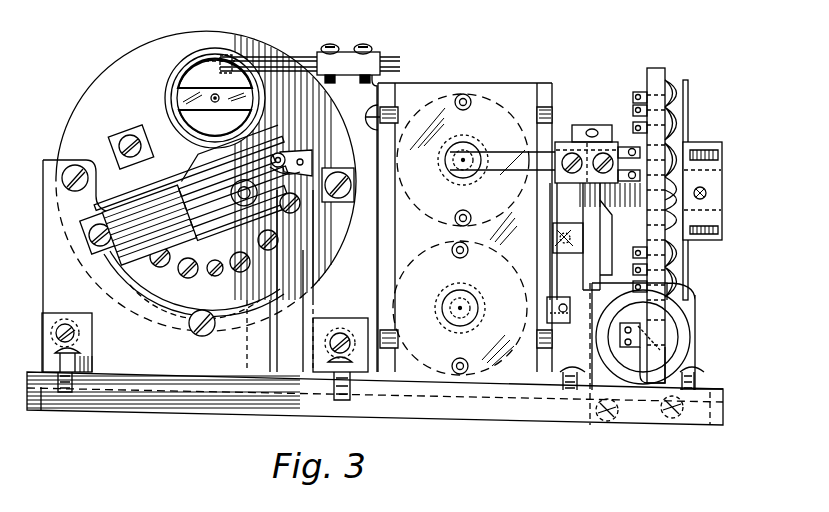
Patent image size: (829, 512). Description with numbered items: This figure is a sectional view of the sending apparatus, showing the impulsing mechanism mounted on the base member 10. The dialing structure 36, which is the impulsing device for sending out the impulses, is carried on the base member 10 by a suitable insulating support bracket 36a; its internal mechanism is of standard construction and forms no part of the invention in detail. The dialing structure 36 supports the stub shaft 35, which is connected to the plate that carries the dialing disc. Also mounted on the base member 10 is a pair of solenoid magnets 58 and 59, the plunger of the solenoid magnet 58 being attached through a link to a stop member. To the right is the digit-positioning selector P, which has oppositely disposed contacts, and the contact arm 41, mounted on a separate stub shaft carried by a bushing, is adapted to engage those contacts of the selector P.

The base member 10 is at (41, 389).
The insulating support bracket 36a is at (145, 372).
The dialing structure 36 is at (72, 134).
The stub shaft 35 is at (183, 178).
The solenoid magnet 59 is at (500, 105).
The solenoid magnet 58 is at (421, 252).
The digit-positioning selector P is at (657, 68).
The contact arm 41 is at (690, 142).